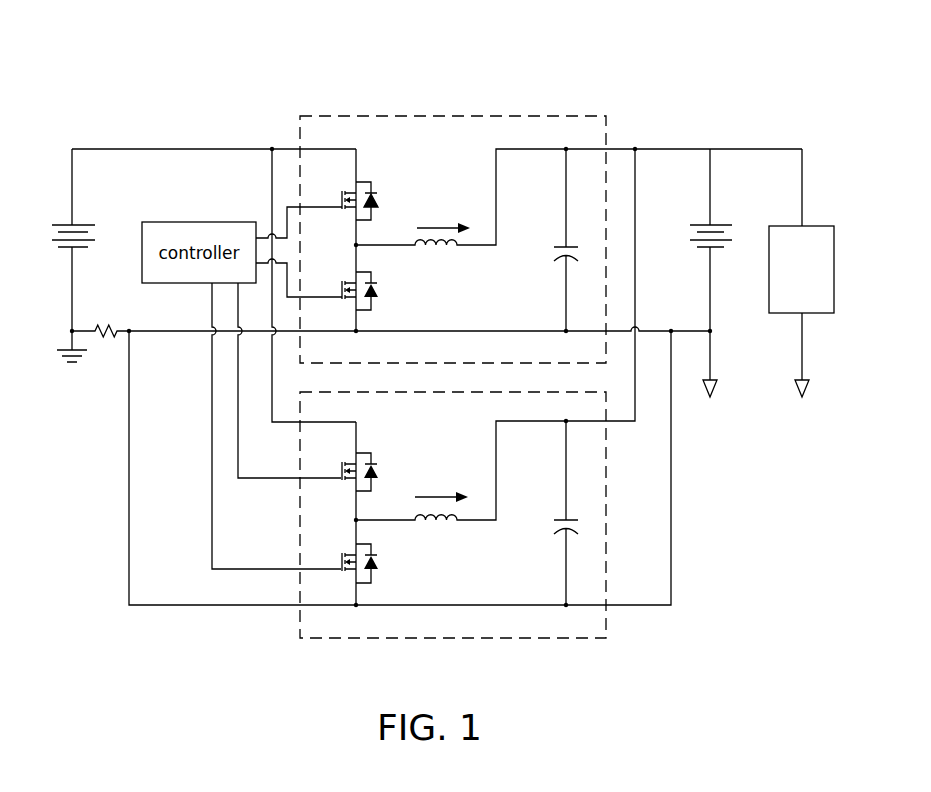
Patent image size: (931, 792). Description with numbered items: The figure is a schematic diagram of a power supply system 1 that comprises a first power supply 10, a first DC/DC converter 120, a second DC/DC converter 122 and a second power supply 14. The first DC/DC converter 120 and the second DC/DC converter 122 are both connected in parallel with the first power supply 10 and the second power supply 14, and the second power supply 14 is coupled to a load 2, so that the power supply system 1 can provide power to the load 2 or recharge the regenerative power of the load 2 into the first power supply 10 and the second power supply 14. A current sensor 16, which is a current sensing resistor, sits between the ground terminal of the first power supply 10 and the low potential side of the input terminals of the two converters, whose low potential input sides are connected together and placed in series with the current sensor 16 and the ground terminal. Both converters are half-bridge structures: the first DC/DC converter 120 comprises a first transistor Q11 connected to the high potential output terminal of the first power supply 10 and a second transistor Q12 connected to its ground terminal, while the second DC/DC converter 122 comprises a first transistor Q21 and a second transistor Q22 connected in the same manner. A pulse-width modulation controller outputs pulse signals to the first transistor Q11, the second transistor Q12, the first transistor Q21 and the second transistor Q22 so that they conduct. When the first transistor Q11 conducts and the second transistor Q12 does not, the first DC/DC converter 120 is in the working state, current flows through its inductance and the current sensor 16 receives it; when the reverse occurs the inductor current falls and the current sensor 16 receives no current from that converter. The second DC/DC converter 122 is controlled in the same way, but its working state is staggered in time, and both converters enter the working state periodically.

The power supply system 1 is at (447, 64).
The first power supply 10 is at (63, 223).
The current sensor 16 is at (108, 325).
The first DC/DC converter 120 is at (338, 116).
The second DC/DC converter 122 is at (300, 617).
The second power supply 14 is at (697, 224).
The load 2 is at (788, 226).
The first transistor Q11 is at (372, 182).
The second transistor Q12 is at (373, 310).
The first transistor Q21 is at (372, 453).
The second transistor Q22 is at (373, 583).